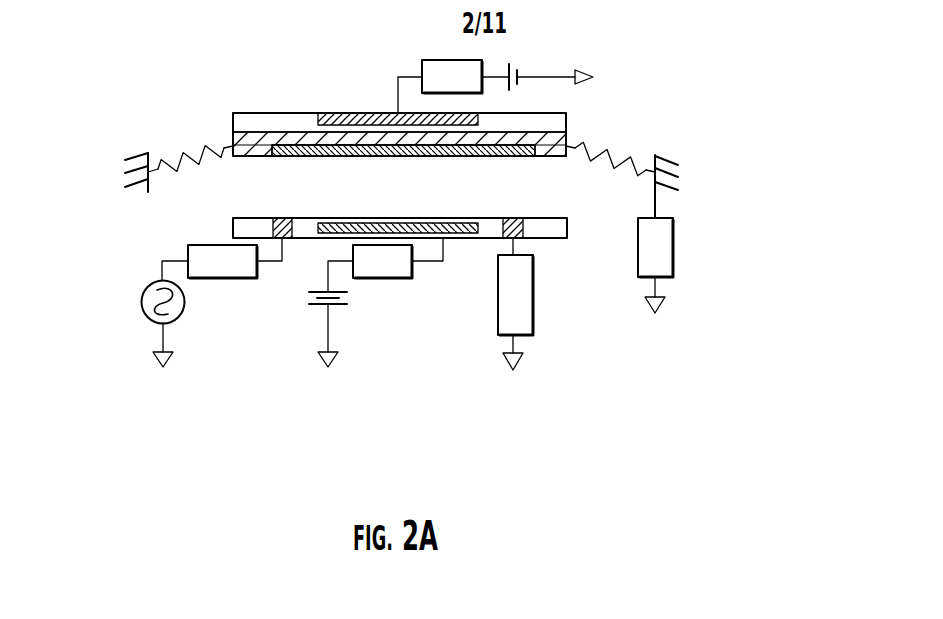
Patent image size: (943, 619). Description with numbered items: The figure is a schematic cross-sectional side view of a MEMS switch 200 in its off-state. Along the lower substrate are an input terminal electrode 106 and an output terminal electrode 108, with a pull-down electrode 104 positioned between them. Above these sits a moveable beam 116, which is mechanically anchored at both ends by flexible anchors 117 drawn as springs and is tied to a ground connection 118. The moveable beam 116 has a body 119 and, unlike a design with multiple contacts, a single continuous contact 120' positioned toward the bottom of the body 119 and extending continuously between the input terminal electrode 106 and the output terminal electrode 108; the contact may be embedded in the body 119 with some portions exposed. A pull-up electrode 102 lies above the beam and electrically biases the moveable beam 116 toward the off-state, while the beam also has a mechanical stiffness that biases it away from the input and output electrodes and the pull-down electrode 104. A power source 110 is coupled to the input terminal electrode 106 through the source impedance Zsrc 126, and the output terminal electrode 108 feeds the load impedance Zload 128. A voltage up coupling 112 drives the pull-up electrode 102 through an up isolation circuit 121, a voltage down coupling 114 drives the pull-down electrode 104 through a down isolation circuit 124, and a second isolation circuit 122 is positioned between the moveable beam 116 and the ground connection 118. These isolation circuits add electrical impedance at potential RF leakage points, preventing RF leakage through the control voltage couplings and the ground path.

The MEMS switch 200 is at (688, 93).
The pull-up electrode 102 is at (356, 114).
The pull-down electrode 104 is at (447, 224).
The input terminal electrode 106 is at (283, 217).
The output terminal electrode 108 is at (515, 218).
The power source 110 is at (141, 302).
The voltage up (Vup) coupling 112 is at (523, 64).
The voltage down (Vdn) coupling 114 is at (308, 297).
The moveable beam 116 is at (276, 138).
The flexible anchors 117 is at (190, 152).
The ground connection 118 is at (596, 77).
The body 119 is at (233, 141).
The continuous contact 120' is at (403, 174).
The up isolation circuit 121 is at (398, 74).
The second isolation circuit 122 is at (673, 258).
The down isolation circuit 124 is at (402, 279).
The Zsrc 126 is at (203, 245).
The Zload 128 is at (533, 288).